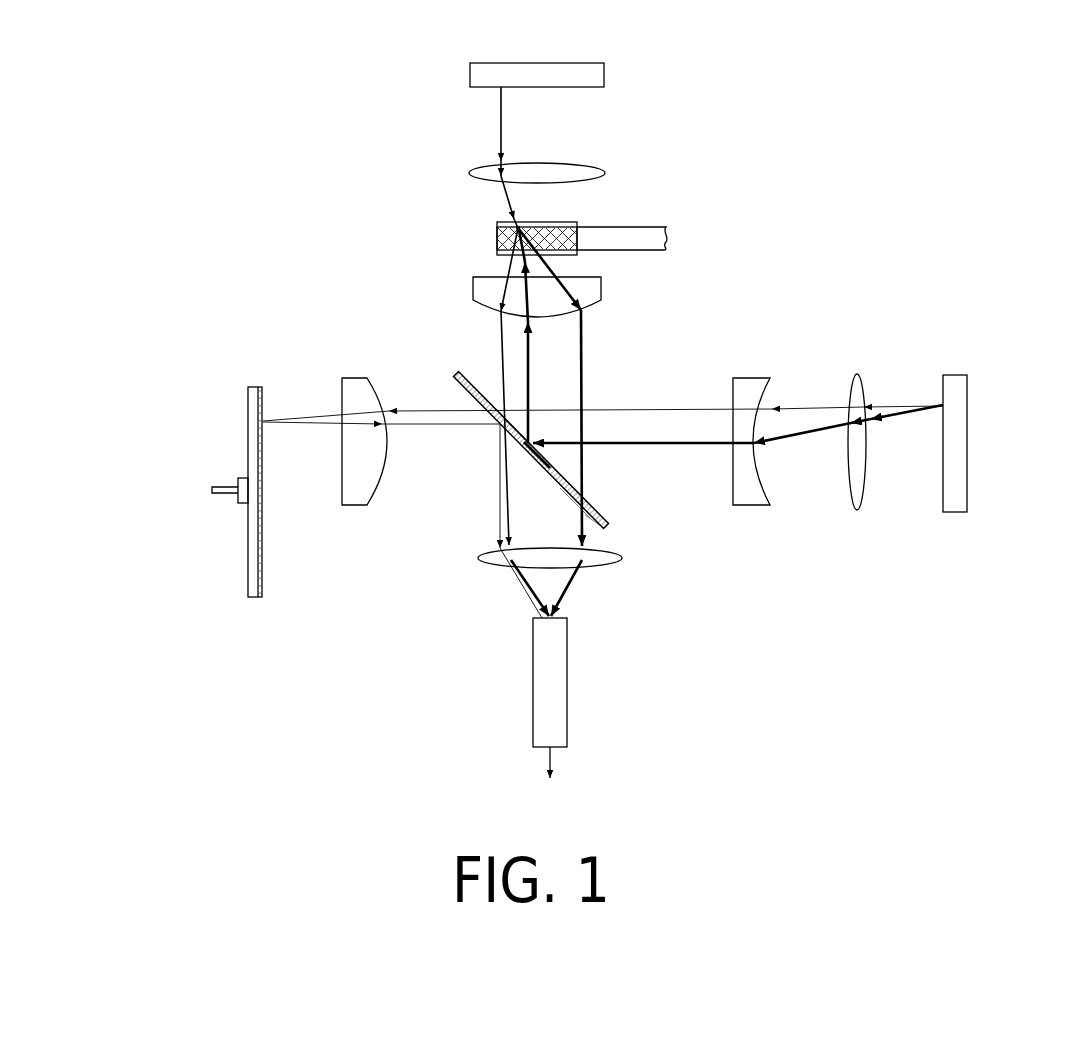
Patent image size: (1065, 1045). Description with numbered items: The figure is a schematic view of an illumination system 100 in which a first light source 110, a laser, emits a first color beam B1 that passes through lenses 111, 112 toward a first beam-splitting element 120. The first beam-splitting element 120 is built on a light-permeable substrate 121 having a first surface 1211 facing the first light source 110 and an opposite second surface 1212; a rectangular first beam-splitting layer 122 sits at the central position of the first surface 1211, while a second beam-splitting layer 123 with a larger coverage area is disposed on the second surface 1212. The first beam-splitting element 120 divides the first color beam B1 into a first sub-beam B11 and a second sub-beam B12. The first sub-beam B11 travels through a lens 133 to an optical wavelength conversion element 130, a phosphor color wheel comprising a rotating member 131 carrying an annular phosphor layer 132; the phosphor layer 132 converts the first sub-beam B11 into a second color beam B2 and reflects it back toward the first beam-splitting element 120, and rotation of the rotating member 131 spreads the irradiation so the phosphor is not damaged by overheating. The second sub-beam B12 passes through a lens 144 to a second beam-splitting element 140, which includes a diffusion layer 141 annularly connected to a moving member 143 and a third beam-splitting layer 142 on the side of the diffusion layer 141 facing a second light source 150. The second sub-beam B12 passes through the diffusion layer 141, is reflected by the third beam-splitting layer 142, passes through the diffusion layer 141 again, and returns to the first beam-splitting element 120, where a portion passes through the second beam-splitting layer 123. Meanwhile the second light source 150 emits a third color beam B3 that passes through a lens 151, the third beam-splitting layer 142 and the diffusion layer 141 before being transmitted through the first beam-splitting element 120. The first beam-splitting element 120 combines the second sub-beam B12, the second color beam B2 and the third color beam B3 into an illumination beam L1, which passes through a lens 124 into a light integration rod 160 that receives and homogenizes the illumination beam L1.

The illumination system 100 is at (215, 152).
The first light source 110 is at (960, 388).
The lens 111 is at (857, 380).
The lens 112 is at (754, 387).
The first beam-splitting element 120 is at (626, 512).
The substrate 121 is at (607, 528).
The first surface 1211 is at (601, 515).
The second surface 1212 is at (597, 497).
The first beam-splitting layer 122 is at (523, 452).
The second beam-splitting layer 123 is at (612, 535).
The lens 124 is at (490, 562).
The optical wavelength conversion element 130 is at (228, 423).
The rotating member 131 is at (255, 387).
The phosphor layer 132 is at (262, 387).
The lens 133 is at (358, 385).
The second beam-splitting element 140 is at (622, 202).
The diffusion layer 141 is at (578, 240).
The third beam-splitting layer 142 is at (510, 225).
The moving member 143 is at (650, 233).
The lens 144 is at (593, 290).
The second light source 150 is at (588, 74).
The lens 151 is at (478, 165).
The light integration rod 160 is at (550, 661).
The first color beam B1 is at (909, 399).
The first sub-beam B11 is at (313, 415).
The second sub-beam B12 is at (532, 366).
The second color beam B2 is at (308, 428).
The third color beam B3 is at (503, 110).
The illumination beam L1 is at (553, 762).